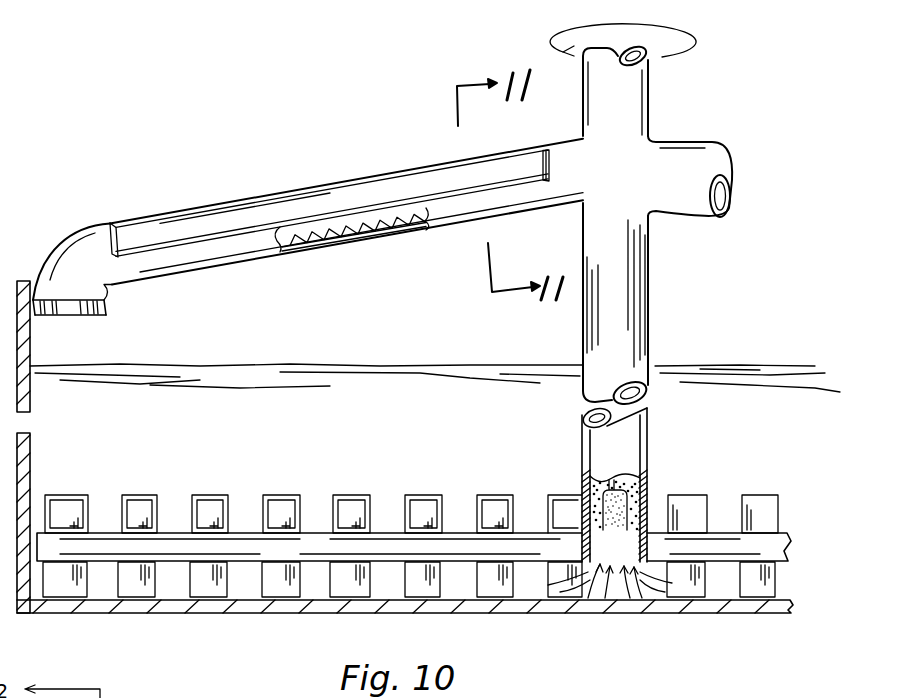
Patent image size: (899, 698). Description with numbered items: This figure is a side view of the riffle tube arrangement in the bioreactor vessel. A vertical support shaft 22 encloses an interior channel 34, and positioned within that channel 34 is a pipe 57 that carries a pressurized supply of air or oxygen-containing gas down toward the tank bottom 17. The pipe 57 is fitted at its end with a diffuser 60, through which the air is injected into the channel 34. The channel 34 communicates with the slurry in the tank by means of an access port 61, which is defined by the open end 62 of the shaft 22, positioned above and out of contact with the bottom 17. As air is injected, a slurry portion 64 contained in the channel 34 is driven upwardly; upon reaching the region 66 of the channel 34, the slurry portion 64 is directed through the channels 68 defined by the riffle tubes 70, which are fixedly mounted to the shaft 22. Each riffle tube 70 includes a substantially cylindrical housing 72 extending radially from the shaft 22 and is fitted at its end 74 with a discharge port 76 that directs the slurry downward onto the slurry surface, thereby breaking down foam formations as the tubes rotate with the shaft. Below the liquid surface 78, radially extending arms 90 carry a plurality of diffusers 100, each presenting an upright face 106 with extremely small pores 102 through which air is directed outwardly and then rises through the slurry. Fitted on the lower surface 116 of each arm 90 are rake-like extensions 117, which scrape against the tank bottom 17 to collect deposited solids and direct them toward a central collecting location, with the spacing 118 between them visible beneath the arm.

The cylindrical housing 72 is at (257, 210).
The channels 68 is at (370, 217).
The riffle tubes 70 is at (264, 264).
The end 74 is at (118, 309).
The discharge port 76 is at (70, 316).
The liquid surface 78 is at (352, 365).
The shaft 22 is at (575, 370).
The region 66 is at (620, 160).
The slurry portion 64 is at (617, 282).
The pipe 57 is at (610, 477).
The diffuser 60 is at (608, 530).
The channel 34 is at (653, 512).
The diffusers 100 is at (370, 497).
The face 106 is at (757, 513).
The pores 102 is at (137, 513).
The radially extending arms 90 is at (450, 537).
The lower support 118 is at (250, 575).
The lower surface 116 is at (320, 562).
The rake-like extensions 117 is at (500, 585).
The tank bottom 17 is at (547, 603).
The access port 61 is at (622, 588).
The open end 62 is at (633, 597).